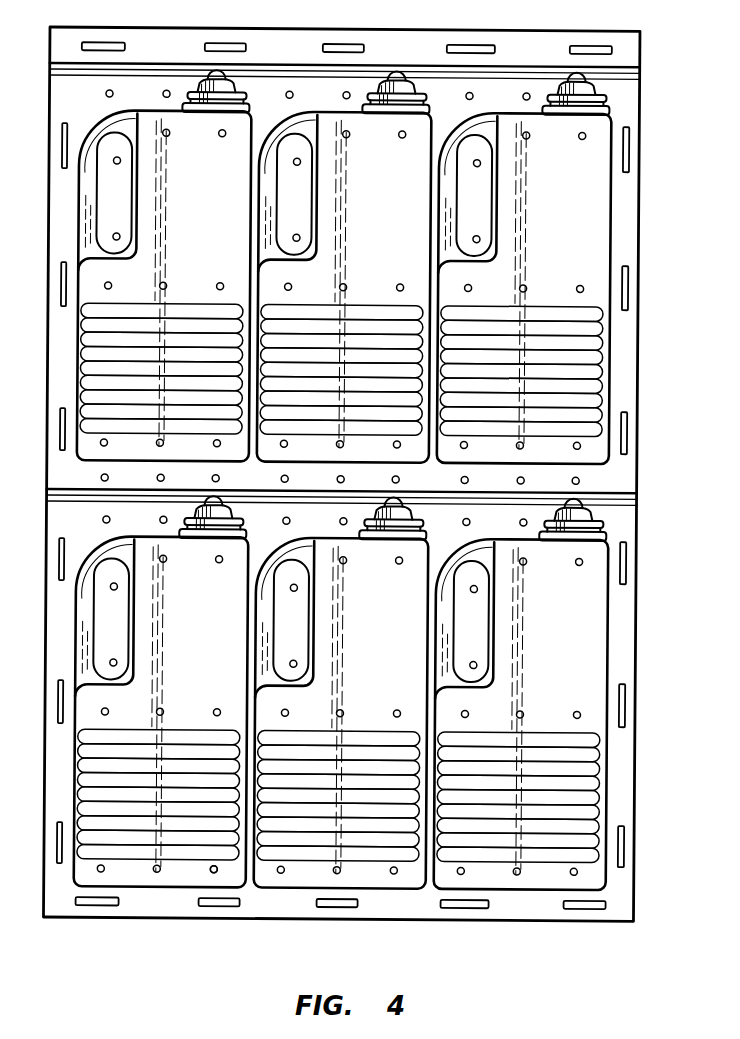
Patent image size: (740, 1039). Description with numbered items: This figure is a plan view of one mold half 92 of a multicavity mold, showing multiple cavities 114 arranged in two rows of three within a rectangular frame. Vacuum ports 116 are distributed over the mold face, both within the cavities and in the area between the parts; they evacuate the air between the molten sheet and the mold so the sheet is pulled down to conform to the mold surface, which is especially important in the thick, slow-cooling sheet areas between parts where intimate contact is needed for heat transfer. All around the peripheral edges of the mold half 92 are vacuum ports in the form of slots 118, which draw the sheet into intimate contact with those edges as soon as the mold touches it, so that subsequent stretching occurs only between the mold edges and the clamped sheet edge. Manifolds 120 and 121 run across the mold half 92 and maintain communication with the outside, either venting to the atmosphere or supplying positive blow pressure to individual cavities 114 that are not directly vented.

The mold half 92 is at (636, 464).
The cavities 114 is at (222, 260).
The vacuum ports 116 is at (224, 869).
The slots 118 is at (589, 906).
The manifold 120 is at (636, 499).
The manifold 121 is at (636, 74).